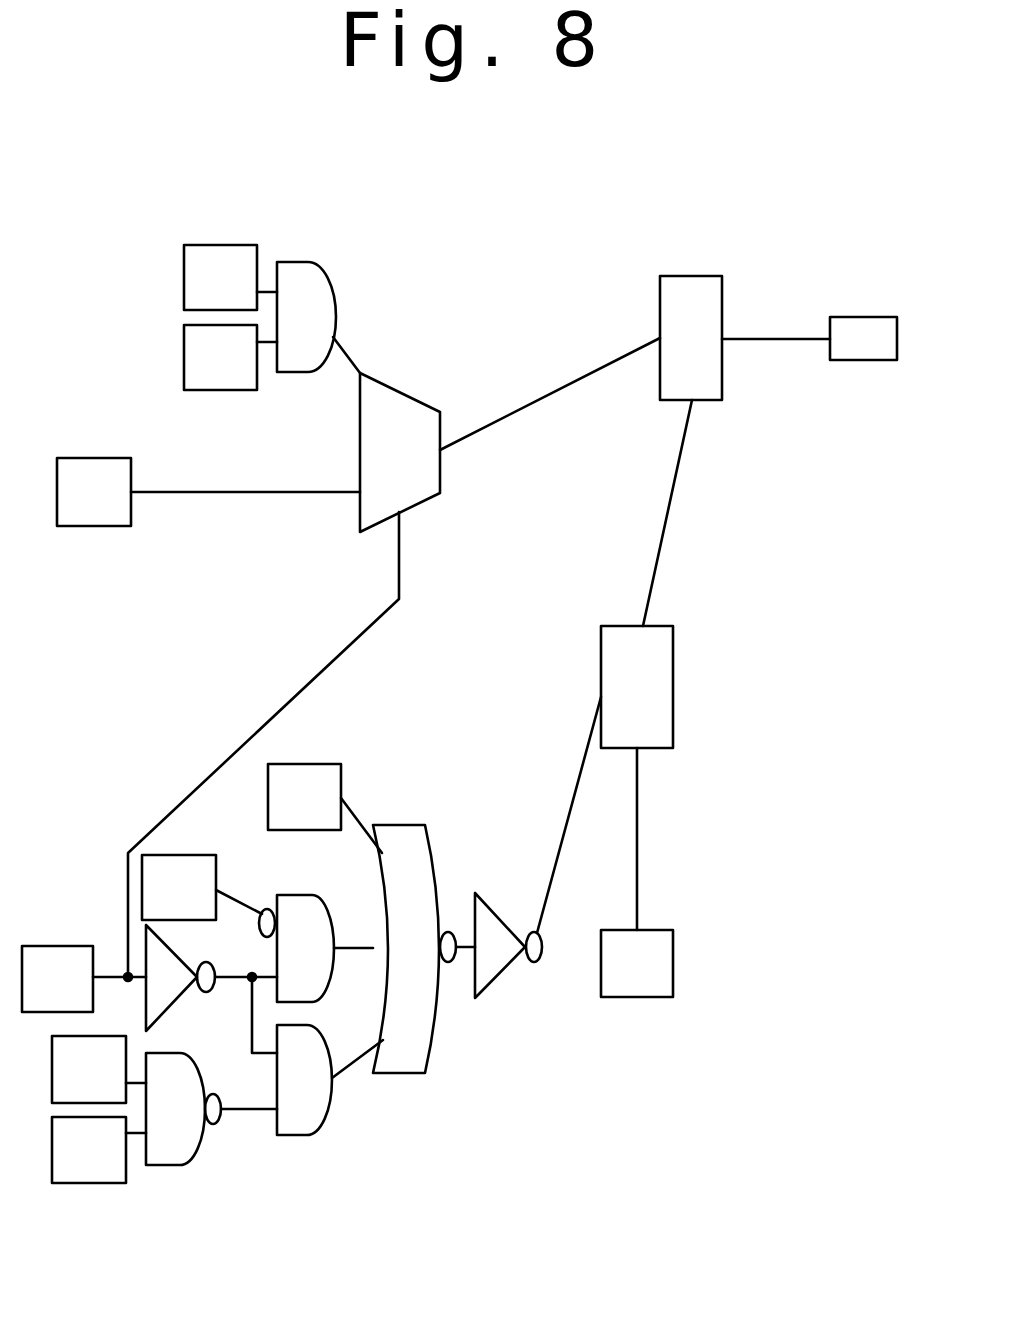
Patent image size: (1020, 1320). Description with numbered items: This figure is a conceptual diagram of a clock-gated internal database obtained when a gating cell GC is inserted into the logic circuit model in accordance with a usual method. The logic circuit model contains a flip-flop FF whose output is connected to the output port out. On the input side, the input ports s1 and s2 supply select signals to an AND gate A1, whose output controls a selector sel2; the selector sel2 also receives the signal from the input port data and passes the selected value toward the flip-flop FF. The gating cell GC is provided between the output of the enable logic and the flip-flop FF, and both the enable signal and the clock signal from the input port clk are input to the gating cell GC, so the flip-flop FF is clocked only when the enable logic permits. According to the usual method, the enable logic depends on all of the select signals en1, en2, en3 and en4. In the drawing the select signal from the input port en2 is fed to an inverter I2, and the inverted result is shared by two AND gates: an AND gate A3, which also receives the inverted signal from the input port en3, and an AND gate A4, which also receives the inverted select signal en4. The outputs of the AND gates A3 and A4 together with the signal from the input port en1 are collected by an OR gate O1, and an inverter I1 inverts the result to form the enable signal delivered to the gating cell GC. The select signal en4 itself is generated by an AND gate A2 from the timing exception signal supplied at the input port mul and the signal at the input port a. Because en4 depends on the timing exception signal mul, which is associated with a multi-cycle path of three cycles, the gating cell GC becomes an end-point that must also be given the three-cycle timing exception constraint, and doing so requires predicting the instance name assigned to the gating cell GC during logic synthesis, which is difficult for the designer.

The input port s1 is at (230, 277).
The input port s2 is at (230, 357).
The AND gate A1 is at (318, 317).
The selector sel2 is at (510, 435).
The input port data is at (208, 492).
The flip-flop FF is at (736, 451).
The output port out is at (863, 338).
The gating cell GC is at (605, 779).
The input port clk is at (637, 963).
The input port en2 is at (233, 762).
The input port en3 is at (202, 887).
The input port en1 is at (325, 808).
The inverter I2 is at (211, 989).
The AND gate A3 is at (316, 948).
The AND gate A4 is at (330, 1080).
The OR gate O1 is at (424, 949).
The inverter I1 is at (508, 945).
The input port mul is at (99, 1069).
The input port a is at (99, 1150).
The AND gate A2 is at (211, 1109).
The select signal en4 is at (248, 1130).